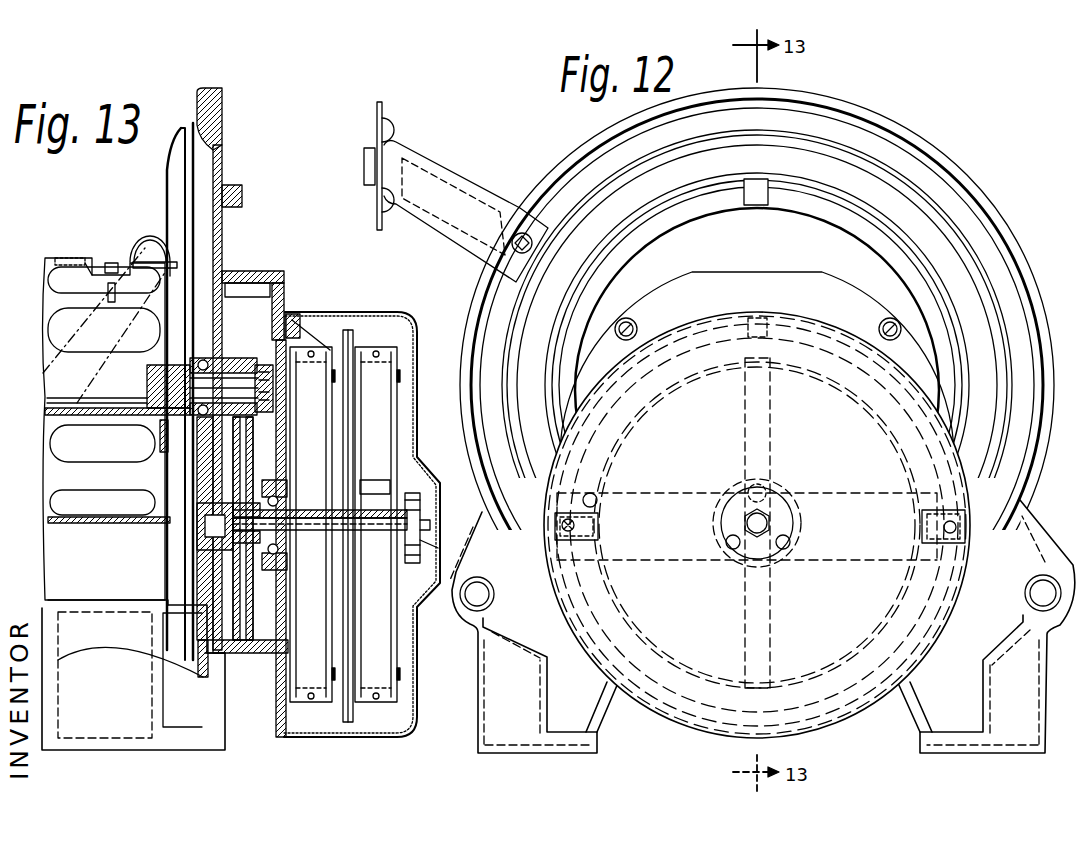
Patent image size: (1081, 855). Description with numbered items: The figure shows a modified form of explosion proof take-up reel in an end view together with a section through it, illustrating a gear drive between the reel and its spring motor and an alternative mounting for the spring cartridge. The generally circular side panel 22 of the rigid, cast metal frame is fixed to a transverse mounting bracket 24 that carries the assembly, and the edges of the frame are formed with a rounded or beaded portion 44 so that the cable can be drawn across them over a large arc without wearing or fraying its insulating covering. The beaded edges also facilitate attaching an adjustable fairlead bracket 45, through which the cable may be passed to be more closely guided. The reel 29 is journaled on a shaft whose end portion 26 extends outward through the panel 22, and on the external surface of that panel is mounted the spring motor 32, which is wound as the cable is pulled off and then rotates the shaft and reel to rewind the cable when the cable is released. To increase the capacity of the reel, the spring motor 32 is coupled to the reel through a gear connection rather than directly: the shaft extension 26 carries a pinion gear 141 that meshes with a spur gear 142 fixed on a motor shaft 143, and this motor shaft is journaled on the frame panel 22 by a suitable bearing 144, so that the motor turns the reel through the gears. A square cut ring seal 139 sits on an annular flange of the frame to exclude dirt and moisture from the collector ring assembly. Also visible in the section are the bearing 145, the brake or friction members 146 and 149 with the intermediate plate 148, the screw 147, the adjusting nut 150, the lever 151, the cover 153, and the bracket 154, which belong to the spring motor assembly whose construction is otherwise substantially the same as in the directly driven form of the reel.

In FIG. 12, the side panel 22 is at (934, 173).
In FIG. 13, the side panel 22 is at (222, 148).
In FIG. 12, the transverse mounting bracket 24 is at (566, 730).
In FIG. 13, the transverse mounting bracket 24 is at (107, 730).
In FIG. 13, the shaft end portion 26 is at (240, 372).
In FIG. 13, the reel 29 is at (62, 263).
In FIG. 13, the spring motor 32 is at (404, 388).
In FIG. 12, the rounded or beaded portion 44 is at (542, 183).
In FIG. 12, the adjustable fairlead bracket 45 is at (440, 167).
In FIG. 12, the square cut ring seal 139 is at (764, 276).
In FIG. 13, the square cut ring seal 139 is at (266, 273).
In FIG. 13, the pinion gear 141 is at (245, 372).
In FIG. 13, the spur gear 142 is at (245, 640).
In FIG. 13, the motor shaft 143 is at (301, 518).
In FIG. 13, the bearing 144 is at (207, 543).
In FIG. 13, the bearing 145 is at (272, 555).
In FIG. 12, the brake pad 146 is at (600, 503).
In FIG. 13, the brake pad 146 is at (310, 330).
In FIG. 12, the screw 147 is at (600, 530).
In FIG. 13, the intermediate plate 148 is at (347, 330).
In FIG. 13, the brake pad 149 is at (362, 353).
In FIG. 13, the adjusting nut 150 is at (385, 483).
In FIG. 13, the lever 151 is at (418, 562).
In FIG. 12, the cover 153 is at (968, 464).
In FIG. 13, the cover 153 is at (405, 315).
In FIG. 13, the bracket 154 is at (297, 318).